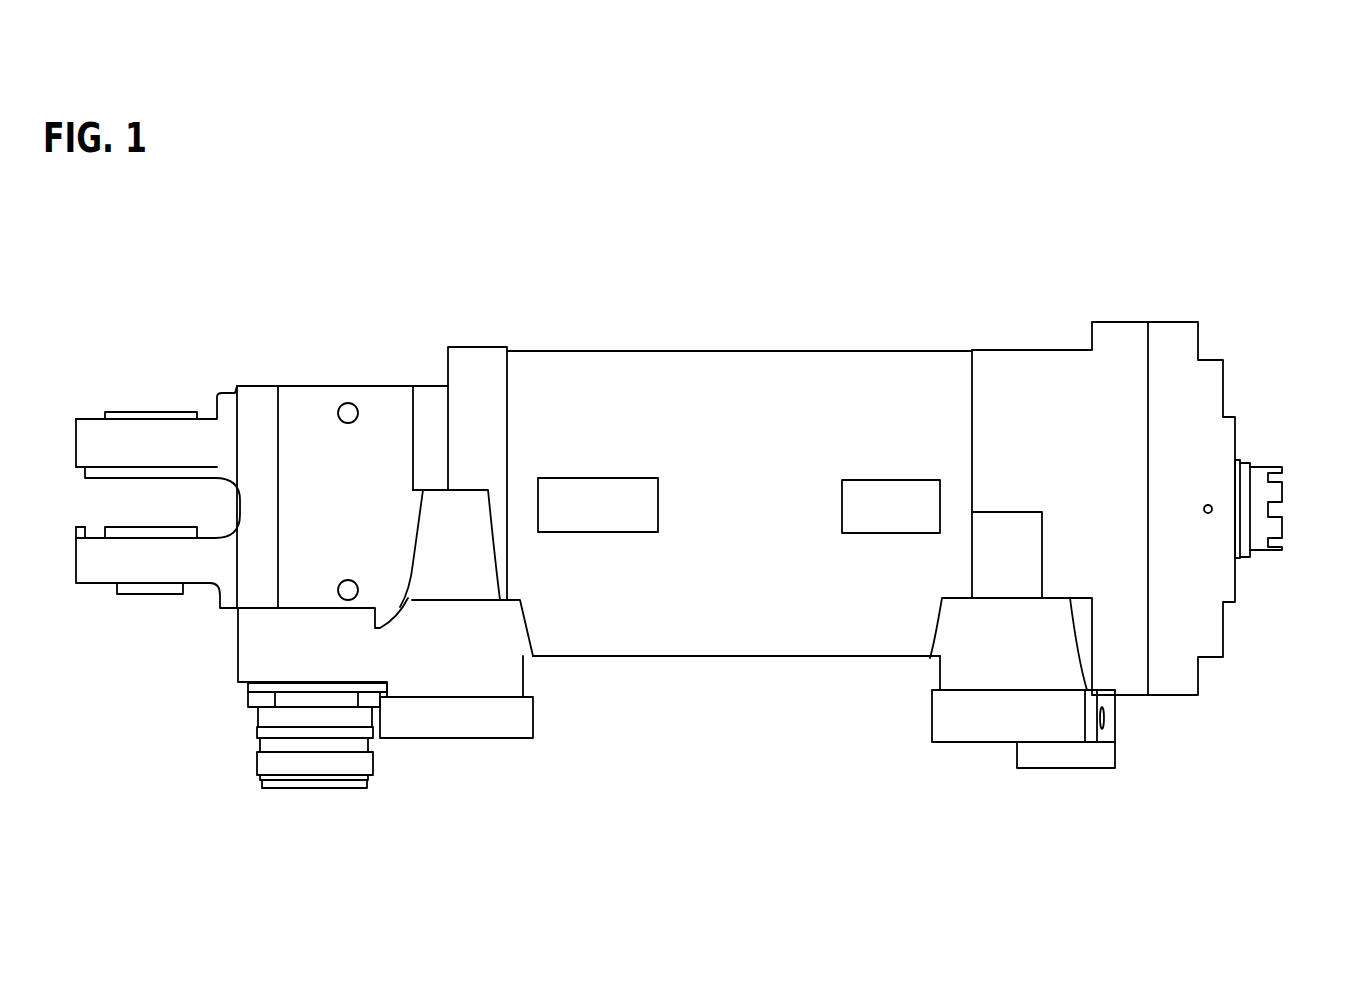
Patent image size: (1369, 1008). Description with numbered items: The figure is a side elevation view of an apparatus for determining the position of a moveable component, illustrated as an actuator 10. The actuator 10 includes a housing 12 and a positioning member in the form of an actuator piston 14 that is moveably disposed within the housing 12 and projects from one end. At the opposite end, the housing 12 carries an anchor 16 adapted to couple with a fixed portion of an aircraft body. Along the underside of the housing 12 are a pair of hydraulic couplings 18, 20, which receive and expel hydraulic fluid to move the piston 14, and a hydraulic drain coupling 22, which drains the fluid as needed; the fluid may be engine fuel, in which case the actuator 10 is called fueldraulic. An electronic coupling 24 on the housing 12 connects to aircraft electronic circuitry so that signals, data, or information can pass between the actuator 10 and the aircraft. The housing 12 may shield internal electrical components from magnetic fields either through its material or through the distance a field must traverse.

The actuator 10 is at (638, 164).
The housing 12 is at (823, 346).
The actuator piston 14 is at (1256, 452).
The anchor 16 is at (115, 450).
The hydraulic coupling 18 is at (477, 738).
The hydraulic coupling 20 is at (972, 742).
The hydraulic drain coupling 22 is at (1067, 768).
The electronic coupling 24 is at (313, 788).